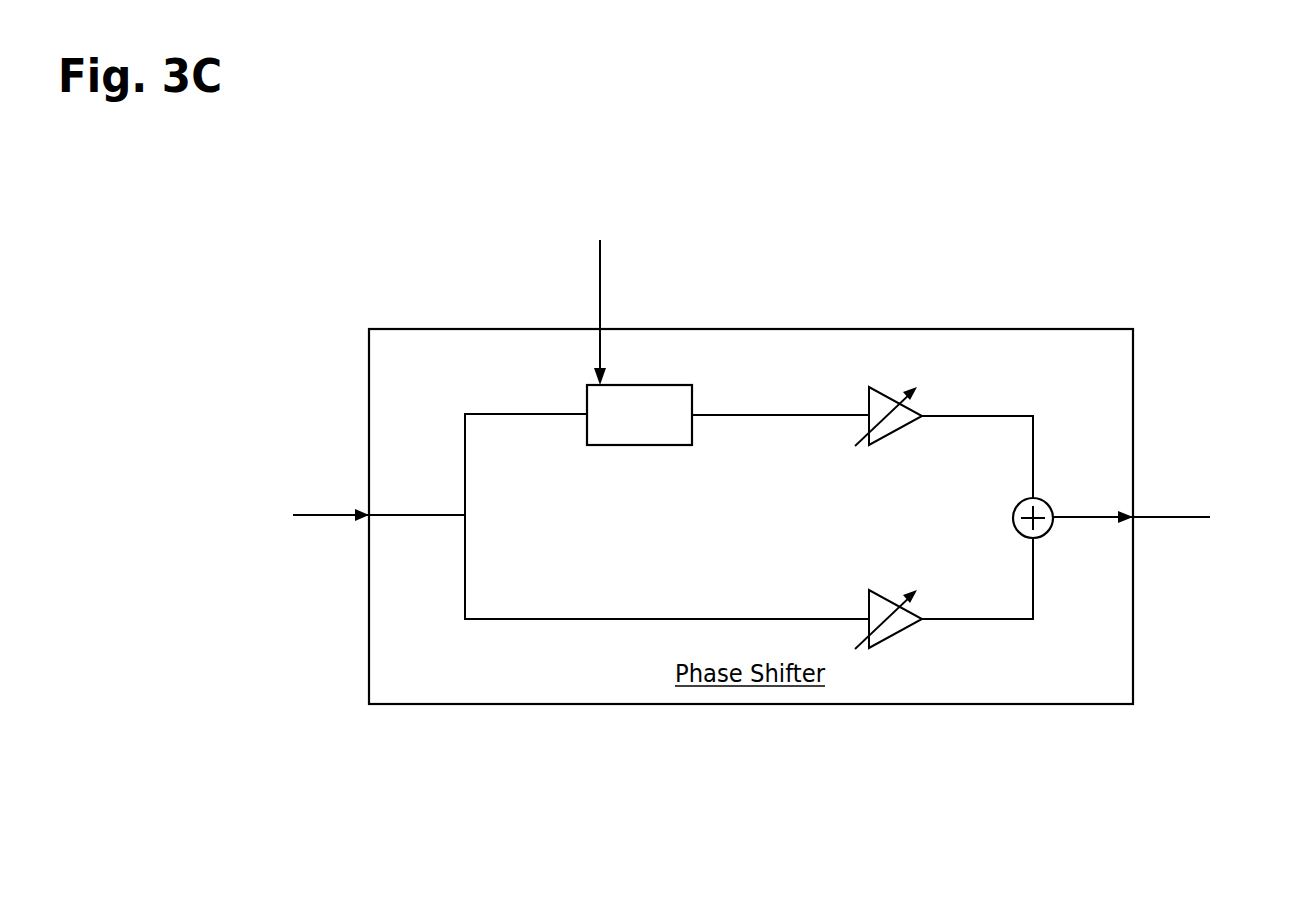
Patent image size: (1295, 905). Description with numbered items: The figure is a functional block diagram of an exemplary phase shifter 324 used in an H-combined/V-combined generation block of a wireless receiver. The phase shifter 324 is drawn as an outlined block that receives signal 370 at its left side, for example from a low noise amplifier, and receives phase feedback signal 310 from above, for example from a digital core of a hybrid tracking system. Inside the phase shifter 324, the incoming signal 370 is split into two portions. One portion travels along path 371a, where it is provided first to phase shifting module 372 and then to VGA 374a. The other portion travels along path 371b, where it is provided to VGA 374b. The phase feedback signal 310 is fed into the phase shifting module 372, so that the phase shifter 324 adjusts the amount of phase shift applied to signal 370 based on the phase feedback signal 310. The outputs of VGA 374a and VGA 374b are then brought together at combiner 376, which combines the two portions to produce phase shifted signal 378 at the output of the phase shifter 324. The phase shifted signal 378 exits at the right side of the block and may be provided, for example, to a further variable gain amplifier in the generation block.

The phase shifter 324 is at (1200, 138).
The phase feedback signal 310 is at (600, 262).
The signal 370 is at (323, 512).
The path 371a is at (512, 413).
The path 371b is at (508, 620).
The phase shifting module 372 is at (638, 385).
The VGA 374a is at (892, 396).
The VGA 374b is at (892, 598).
The combiner 376 is at (1048, 500).
The phase shifted signal 378 is at (1172, 516).